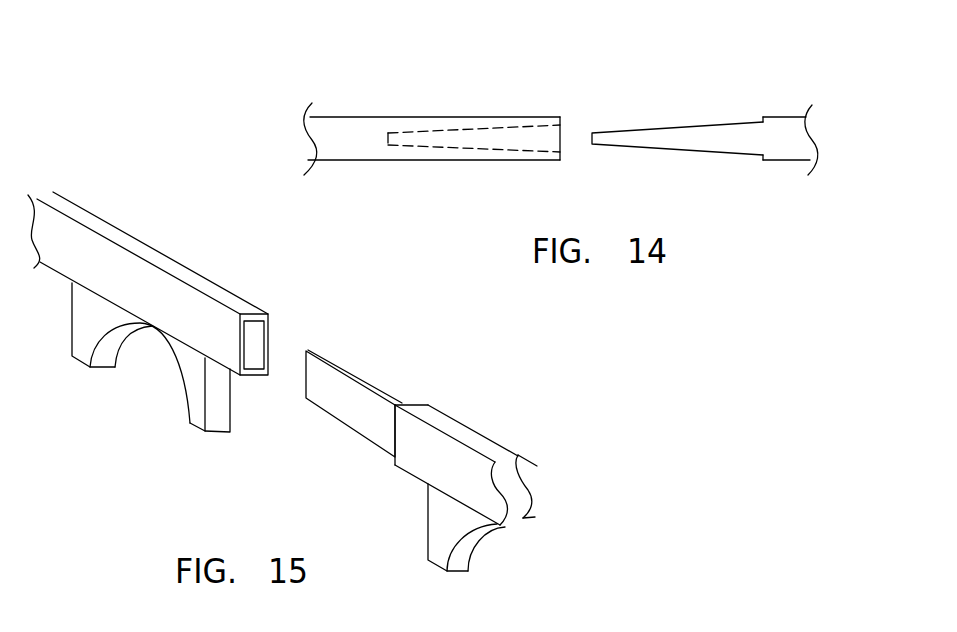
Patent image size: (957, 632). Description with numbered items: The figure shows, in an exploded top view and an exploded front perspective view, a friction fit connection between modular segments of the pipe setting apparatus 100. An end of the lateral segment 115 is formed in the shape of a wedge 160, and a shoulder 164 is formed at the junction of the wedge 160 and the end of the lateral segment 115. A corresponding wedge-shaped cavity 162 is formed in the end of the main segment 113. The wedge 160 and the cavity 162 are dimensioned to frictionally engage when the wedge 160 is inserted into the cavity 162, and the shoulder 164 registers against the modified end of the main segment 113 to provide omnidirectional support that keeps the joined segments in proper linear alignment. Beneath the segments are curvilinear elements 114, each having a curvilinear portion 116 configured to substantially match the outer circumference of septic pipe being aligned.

In FIG. 14, the pipe setting apparatus 100 is at (478, 94).
In FIG. 15, the pipe setting apparatus 100 is at (289, 262).
In FIG. 14, the main segment 113 is at (396, 104).
In FIG. 15, the main segment 113 is at (152, 273).
In FIG. 15, the curvilinear element 114 is at (149, 389).
In FIG. 14, the lateral segment 115 is at (828, 116).
In FIG. 15, the lateral segment 115 is at (495, 451).
In FIG. 15, the curvilinear portion 116 is at (140, 373).
In FIG. 14, the wedge 160 is at (677, 115).
In FIG. 15, the wedge 160 is at (374, 393).
In FIG. 14, the wedge-shaped cavity 162 is at (491, 115).
In FIG. 15, the wedge-shaped cavity 162 is at (310, 322).
In FIG. 14, the shoulder 164 is at (743, 179).
In FIG. 15, the shoulder 164 is at (446, 380).